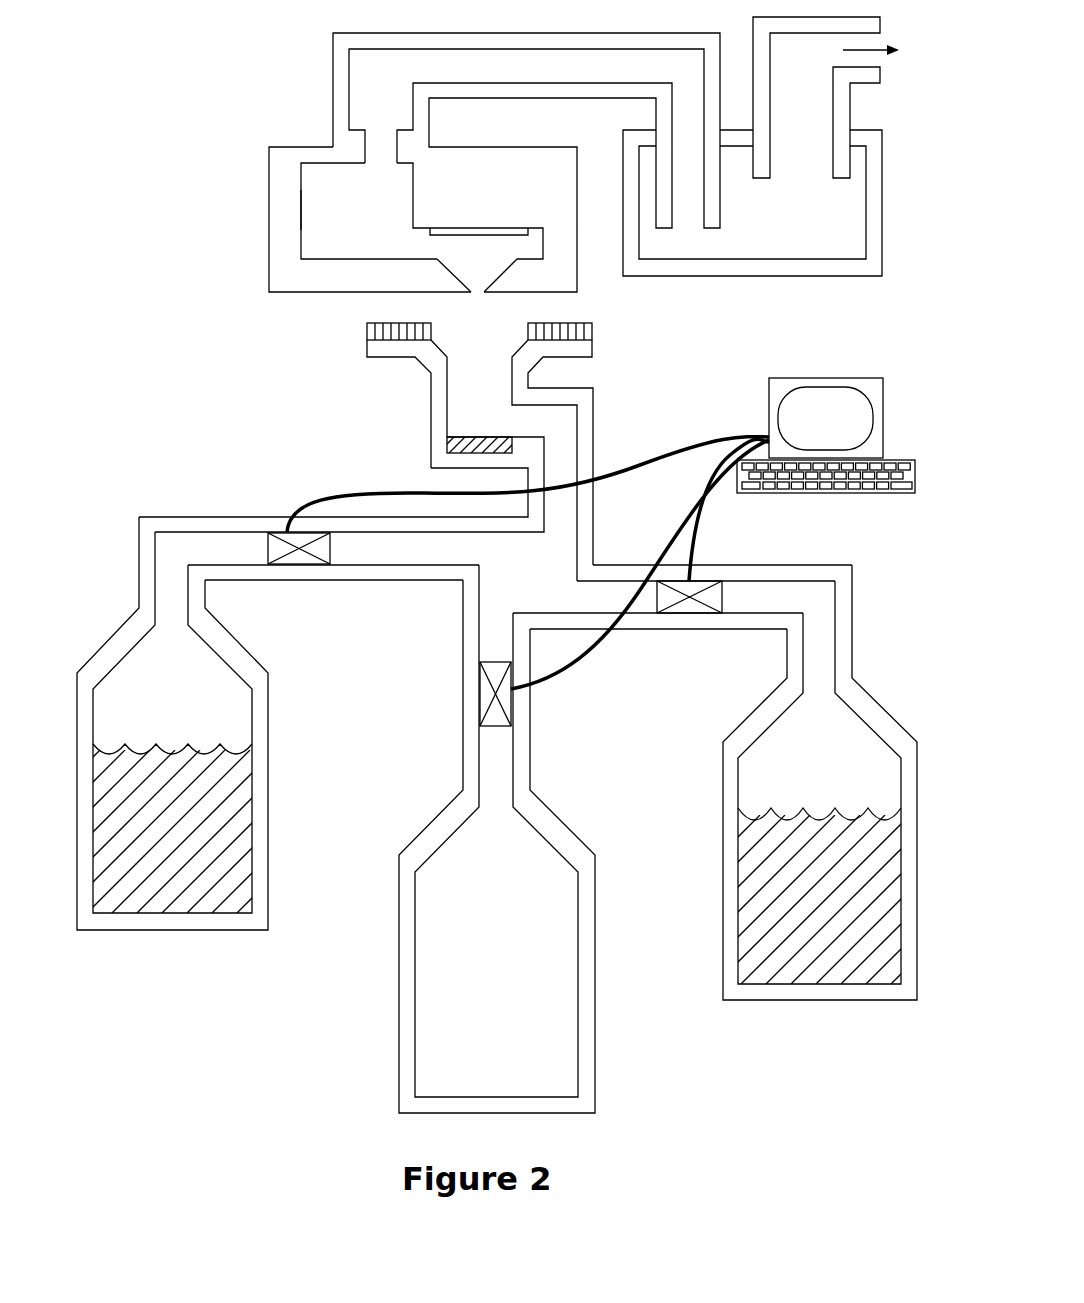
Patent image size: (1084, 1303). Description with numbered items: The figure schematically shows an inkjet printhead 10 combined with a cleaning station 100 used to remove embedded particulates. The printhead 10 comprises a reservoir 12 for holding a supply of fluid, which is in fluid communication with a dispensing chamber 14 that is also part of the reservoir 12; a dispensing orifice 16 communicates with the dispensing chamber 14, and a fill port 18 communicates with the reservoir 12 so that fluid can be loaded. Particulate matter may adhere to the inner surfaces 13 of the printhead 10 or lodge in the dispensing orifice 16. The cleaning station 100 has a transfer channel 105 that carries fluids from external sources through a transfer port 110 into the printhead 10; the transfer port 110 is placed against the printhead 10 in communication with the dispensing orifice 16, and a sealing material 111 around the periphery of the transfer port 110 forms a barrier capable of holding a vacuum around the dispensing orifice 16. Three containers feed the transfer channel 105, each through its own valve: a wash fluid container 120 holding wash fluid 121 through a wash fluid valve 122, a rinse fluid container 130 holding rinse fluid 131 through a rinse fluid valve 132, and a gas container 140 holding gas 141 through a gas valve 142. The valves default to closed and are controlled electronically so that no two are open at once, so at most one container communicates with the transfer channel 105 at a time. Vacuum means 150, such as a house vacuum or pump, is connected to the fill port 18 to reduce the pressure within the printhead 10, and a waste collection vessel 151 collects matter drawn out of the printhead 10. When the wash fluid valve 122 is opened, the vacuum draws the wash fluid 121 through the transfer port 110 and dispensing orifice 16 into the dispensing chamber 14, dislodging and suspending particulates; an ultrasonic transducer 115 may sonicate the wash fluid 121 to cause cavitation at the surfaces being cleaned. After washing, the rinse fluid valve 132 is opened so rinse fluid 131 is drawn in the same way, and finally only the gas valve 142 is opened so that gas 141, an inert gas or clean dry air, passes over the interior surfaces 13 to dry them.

The inkjet printhead 10 is at (556, 168).
The reservoir 12 is at (367, 226).
The inner surfaces 13 is at (303, 213).
The dispensing chamber 14 is at (490, 280).
The dispensing orifice 16 is at (480, 295).
The fill port 18 is at (393, 161).
The cleaning station 100 is at (198, 988).
The transfer channel 105 is at (575, 426).
The transfer port 110 is at (461, 333).
The sealing material 111 is at (367, 330).
The ultrasonic transducer 115 is at (487, 437).
The wash fluid container 120 is at (268, 765).
The wash fluid 121 is at (190, 826).
The wash fluid valve 122 is at (298, 564).
The rinse fluid container 130 is at (723, 838).
The rinse fluid 131 is at (838, 891).
The rinse fluid valve 132 is at (689, 613).
The gas container 140 is at (399, 942).
The gas 141 is at (513, 1015).
The gas valve 142 is at (480, 690).
The vacuum means 150 is at (895, 50).
The waste collection vessel 151 is at (782, 243).